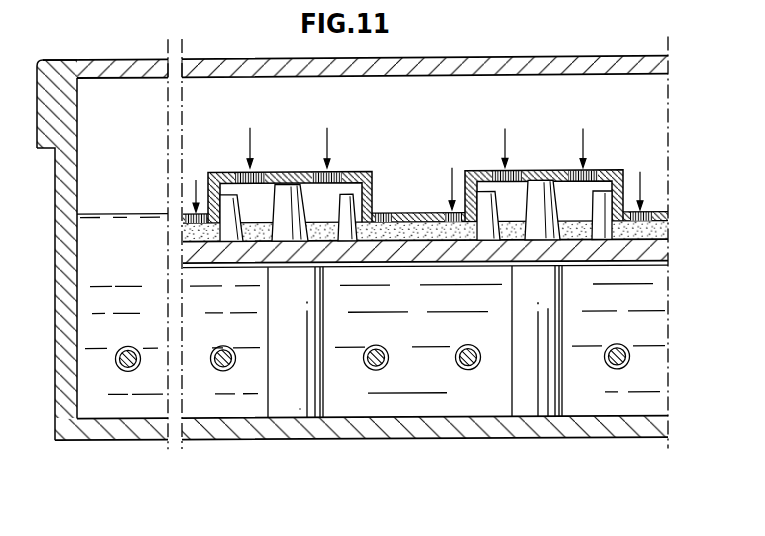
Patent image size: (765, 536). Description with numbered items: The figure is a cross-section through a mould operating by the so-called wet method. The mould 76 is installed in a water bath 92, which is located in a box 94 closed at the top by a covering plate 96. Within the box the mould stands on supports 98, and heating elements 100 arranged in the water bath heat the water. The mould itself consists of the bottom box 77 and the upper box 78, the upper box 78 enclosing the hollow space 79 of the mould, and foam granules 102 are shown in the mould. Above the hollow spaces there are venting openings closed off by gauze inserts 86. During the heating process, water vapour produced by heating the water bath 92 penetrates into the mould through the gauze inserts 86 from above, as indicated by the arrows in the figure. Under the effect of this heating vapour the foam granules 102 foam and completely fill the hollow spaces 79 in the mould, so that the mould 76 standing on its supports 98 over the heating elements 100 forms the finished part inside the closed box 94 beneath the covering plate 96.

The mould 76 is at (375, 159).
The bottom box 77 is at (668, 256).
The upper box 78 is at (617, 172).
The hollow space 79 is at (269, 210).
The gauze inserts 86 is at (390, 214).
The water bath 92 is at (123, 342).
The box 94 is at (62, 240).
The covering plate 96 is at (53, 68).
The supports 98 is at (298, 404).
The heating elements 100 is at (229, 372).
The foam granules 102 is at (667, 235).